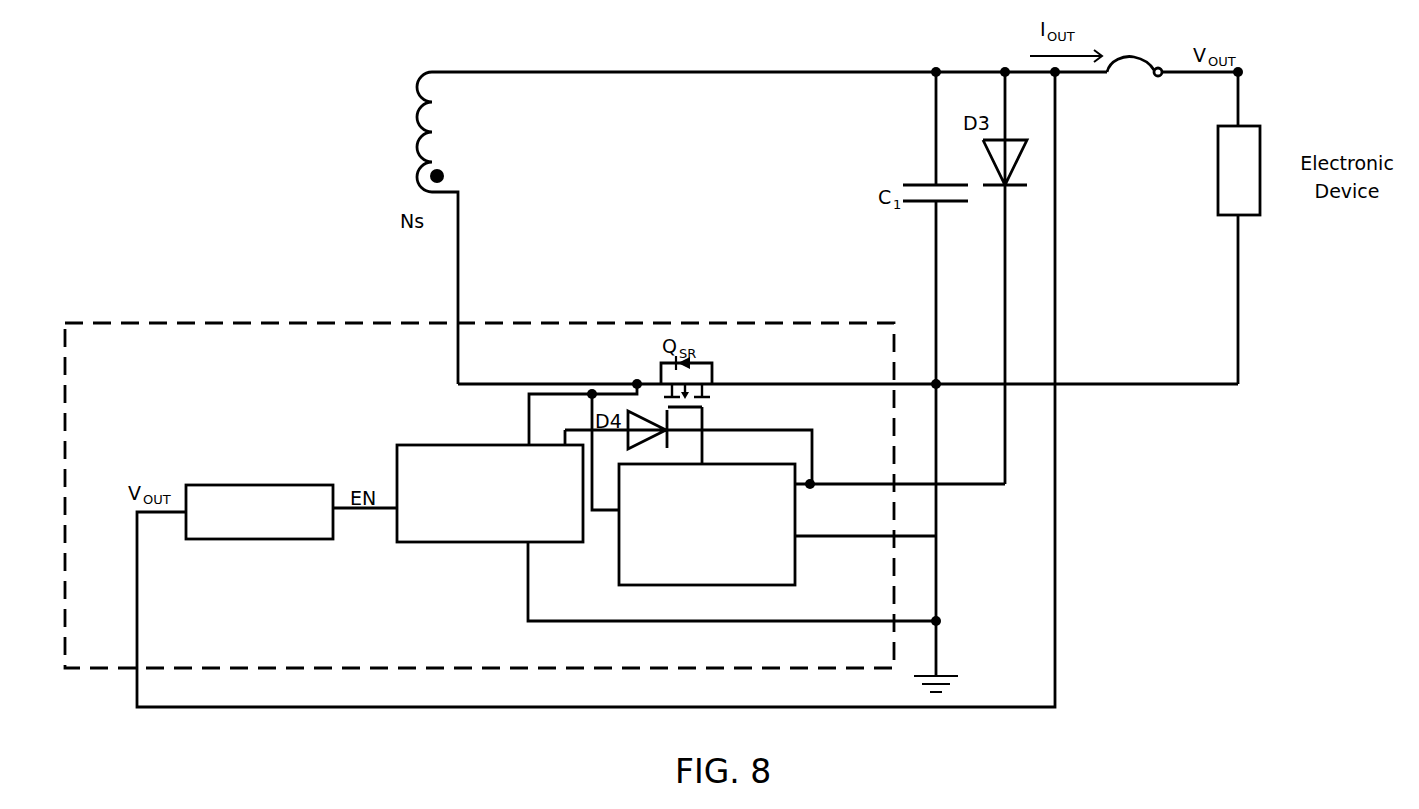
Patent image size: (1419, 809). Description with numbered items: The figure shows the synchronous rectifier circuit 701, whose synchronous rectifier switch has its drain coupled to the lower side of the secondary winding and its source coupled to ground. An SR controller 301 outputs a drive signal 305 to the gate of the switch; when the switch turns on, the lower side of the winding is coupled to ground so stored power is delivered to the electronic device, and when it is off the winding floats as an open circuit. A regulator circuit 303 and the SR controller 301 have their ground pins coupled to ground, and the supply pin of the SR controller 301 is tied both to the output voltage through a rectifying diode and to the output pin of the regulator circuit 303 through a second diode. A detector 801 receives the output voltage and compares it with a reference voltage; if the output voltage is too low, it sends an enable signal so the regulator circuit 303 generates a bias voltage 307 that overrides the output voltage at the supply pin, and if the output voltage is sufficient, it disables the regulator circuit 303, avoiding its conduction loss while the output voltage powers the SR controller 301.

The synchronous rectifier circuit 701 is at (82, 322).
The detector 801 is at (242, 540).
The regulator circuit 303 is at (418, 542).
The SR controller 301 is at (680, 585).
The drive signal 305 is at (702, 437).
The bias voltage 307 is at (565, 432).